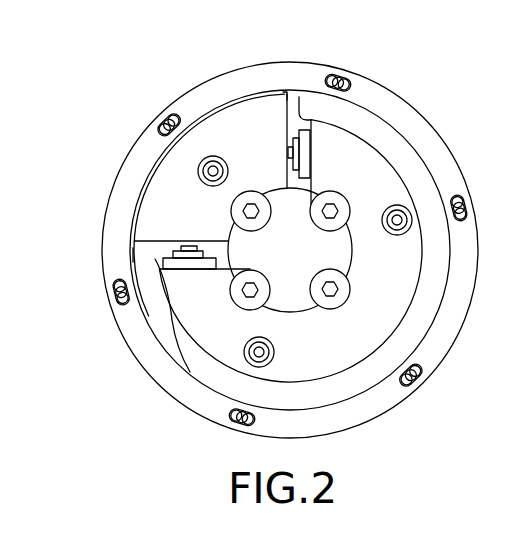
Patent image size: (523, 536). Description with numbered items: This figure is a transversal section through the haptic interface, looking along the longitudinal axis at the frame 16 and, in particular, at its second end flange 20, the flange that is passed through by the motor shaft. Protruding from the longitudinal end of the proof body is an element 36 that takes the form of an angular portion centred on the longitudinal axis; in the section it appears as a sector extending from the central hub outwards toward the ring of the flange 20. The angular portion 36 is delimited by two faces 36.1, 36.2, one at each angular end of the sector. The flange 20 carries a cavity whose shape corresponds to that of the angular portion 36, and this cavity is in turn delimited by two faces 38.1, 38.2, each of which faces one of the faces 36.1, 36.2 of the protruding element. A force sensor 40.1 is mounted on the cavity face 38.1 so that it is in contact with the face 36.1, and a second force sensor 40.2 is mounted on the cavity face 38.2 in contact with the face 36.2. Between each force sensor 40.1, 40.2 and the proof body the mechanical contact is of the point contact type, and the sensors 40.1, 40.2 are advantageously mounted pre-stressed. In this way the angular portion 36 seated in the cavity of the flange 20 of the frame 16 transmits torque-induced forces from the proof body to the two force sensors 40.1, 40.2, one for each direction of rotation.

The frame 16 is at (352, 133).
The second end flange 20 is at (146, 174).
The protruding element 36 is at (222, 148).
The face of the angular portion 36.1 is at (133, 250).
The face of the angular portion 36.2 is at (287, 90).
The face of the cavity 38.1 is at (155, 259).
The face of the cavity 38.2 is at (299, 97).
The force sensor 40.1 is at (174, 244).
The force sensor 40.2 is at (284, 141).